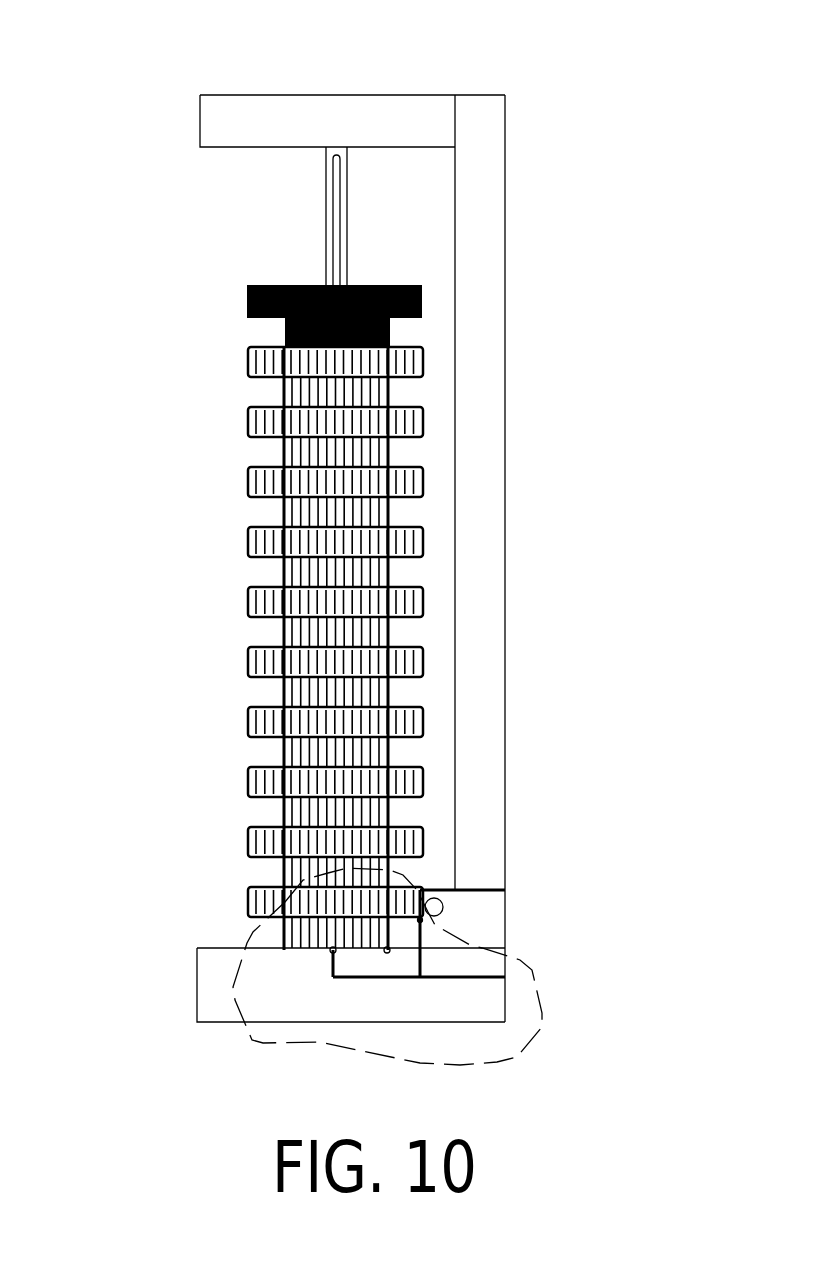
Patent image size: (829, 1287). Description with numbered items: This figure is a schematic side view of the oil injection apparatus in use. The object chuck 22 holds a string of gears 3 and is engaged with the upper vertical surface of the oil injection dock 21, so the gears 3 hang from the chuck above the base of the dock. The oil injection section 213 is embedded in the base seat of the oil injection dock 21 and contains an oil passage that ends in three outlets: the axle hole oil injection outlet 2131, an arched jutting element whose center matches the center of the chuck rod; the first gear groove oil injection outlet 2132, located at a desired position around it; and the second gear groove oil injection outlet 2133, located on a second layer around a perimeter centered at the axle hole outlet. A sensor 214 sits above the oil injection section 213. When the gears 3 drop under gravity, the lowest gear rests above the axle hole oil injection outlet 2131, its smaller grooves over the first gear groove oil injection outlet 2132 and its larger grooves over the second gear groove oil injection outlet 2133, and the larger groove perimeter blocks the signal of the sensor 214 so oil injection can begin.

The object chuck 22 is at (217, 135).
The oil injection dock 21 is at (470, 267).
The gear 3 is at (263, 610).
The sensor 214 is at (440, 900).
The oil injection section 213 is at (360, 1048).
The axle hole oil injection outlet 2131 is at (327, 950).
The first gear groove oil injection outlet 2132 is at (386, 952).
The second gear groove oil injection outlet 2133 is at (423, 925).